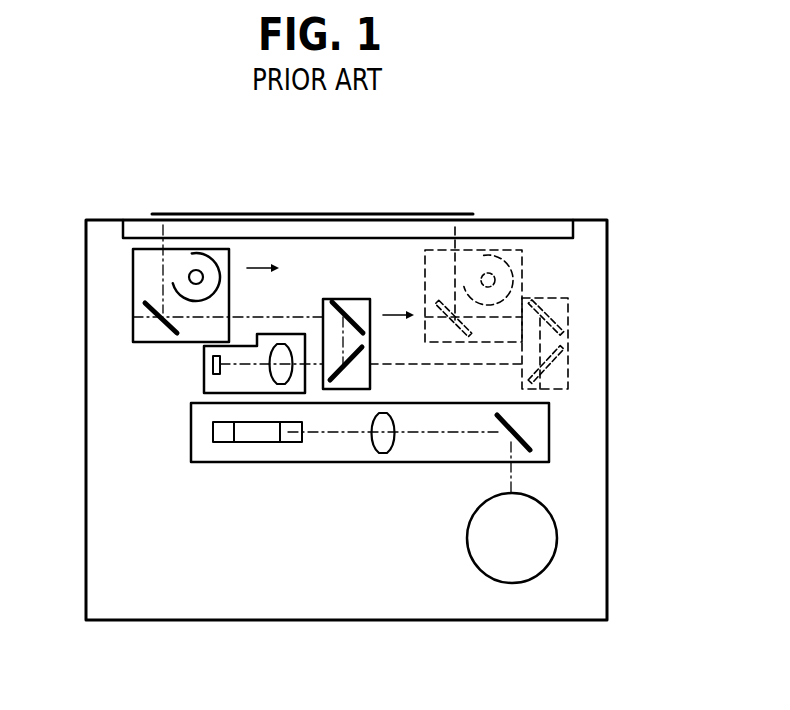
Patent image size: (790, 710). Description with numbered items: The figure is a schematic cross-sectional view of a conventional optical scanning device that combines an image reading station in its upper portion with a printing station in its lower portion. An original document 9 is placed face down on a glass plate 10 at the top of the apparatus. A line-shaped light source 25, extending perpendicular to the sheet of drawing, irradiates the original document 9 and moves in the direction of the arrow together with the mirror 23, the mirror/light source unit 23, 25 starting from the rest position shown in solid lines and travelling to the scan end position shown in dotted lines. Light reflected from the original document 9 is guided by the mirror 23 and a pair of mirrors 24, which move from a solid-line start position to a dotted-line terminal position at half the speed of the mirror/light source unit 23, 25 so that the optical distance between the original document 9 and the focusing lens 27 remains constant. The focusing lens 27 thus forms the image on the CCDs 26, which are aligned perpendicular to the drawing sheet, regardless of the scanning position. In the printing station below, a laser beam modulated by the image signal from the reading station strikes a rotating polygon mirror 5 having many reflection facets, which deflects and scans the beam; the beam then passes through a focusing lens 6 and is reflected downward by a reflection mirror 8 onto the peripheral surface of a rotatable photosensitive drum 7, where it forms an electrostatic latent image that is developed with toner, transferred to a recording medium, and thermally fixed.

The polygon mirror 5 is at (255, 442).
The focusing lens 6 is at (382, 455).
The photosensitive drum 7 is at (512, 585).
The reflection mirror 8 is at (527, 436).
The original document 9 is at (443, 215).
The glass plate 10 is at (577, 230).
The mirror 23 is at (133, 327).
The mirrors 24 is at (348, 313).
The line-shaped light source 25 is at (212, 257).
The CCDs 26 is at (204, 365).
The focusing lens 27 is at (280, 347).